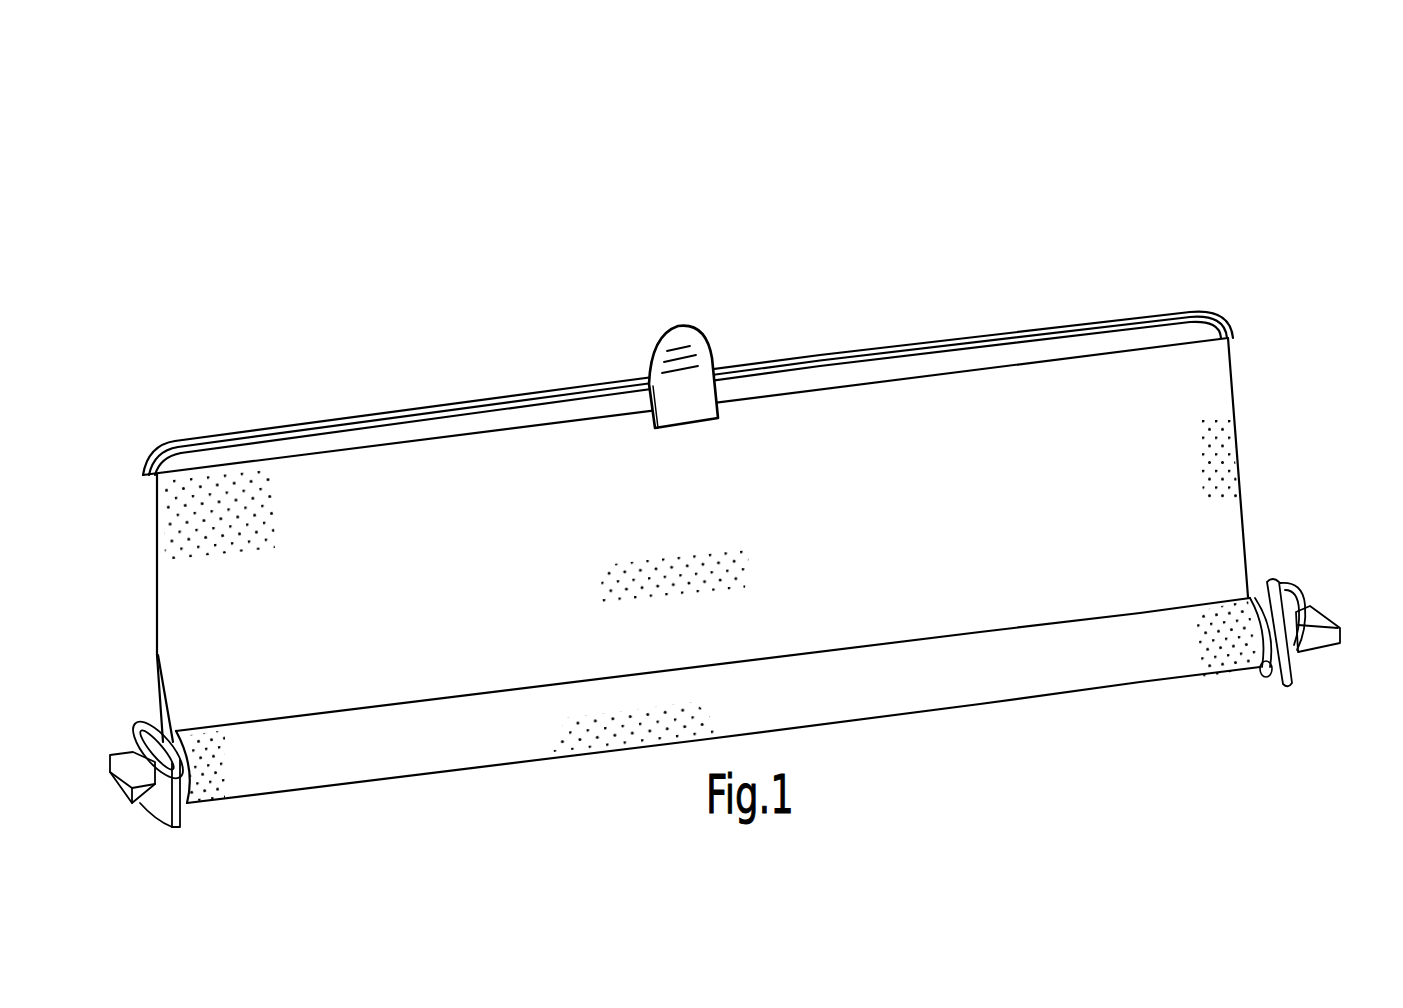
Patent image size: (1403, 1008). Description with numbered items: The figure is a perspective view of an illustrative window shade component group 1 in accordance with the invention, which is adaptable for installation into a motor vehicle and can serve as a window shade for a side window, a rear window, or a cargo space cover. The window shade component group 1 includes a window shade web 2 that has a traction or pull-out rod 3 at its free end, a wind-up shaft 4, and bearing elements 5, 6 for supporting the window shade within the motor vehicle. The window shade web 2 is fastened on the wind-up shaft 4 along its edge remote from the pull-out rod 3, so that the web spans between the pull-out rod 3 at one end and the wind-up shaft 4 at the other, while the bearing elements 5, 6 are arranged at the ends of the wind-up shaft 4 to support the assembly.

The window shade component group 1 is at (1087, 213).
The window shade web 2 is at (1232, 424).
The pull-out rod 3 is at (853, 378).
The wind-up shaft 4 is at (1262, 672).
The bearing element 5 is at (123, 725).
The bearing element 6 is at (1296, 574).